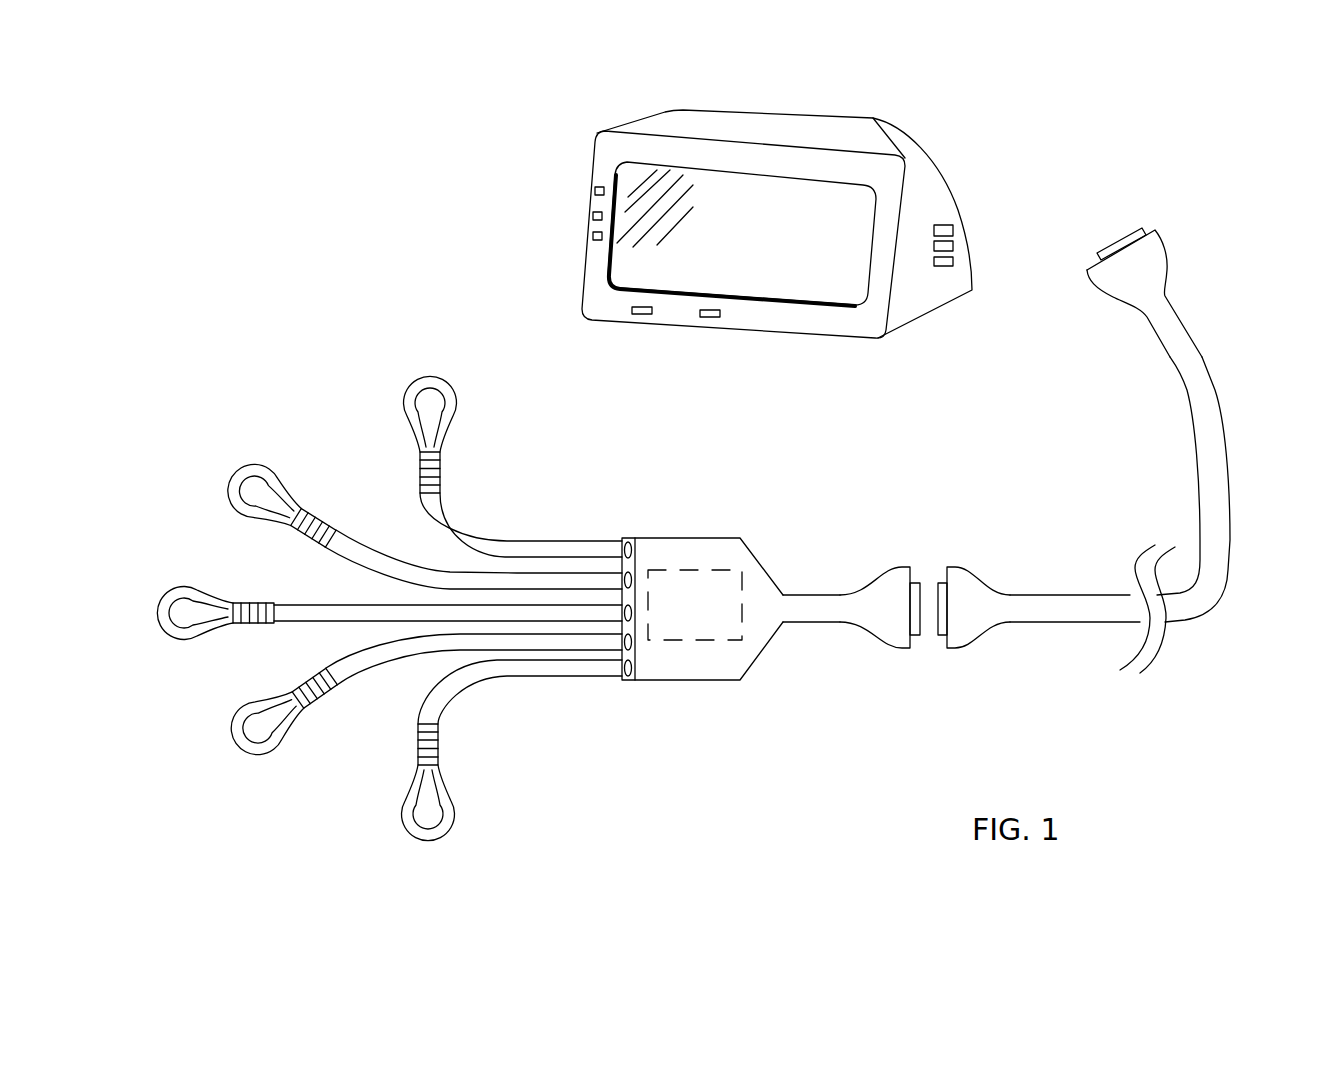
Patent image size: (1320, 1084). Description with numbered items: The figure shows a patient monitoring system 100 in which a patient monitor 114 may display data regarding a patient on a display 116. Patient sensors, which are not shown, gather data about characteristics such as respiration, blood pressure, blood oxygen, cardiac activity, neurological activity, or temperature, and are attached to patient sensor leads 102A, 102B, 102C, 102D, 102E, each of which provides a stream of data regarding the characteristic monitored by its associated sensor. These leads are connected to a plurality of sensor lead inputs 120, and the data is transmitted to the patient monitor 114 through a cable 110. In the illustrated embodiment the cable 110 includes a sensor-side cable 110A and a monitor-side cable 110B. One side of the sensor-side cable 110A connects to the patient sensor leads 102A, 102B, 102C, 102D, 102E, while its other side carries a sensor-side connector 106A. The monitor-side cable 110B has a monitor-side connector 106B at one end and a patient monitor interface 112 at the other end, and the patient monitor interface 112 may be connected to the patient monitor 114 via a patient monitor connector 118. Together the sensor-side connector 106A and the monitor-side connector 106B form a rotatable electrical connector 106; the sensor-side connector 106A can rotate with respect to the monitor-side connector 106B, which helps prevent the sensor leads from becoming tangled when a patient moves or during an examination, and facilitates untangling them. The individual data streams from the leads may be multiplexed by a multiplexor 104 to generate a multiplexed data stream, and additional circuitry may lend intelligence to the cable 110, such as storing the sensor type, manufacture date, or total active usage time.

The patient monitoring system 100 is at (428, 225).
The patient sensor lead 102A is at (432, 372).
The patient sensor lead 102B is at (250, 462).
The patient sensor lead 102C is at (187, 590).
The patient sensor lead 102D is at (243, 760).
The patient sensor lead 102E is at (427, 845).
The multiplexor 104 is at (693, 560).
The rotatable electrical connector 106 is at (867, 655).
The sensor-side connector 106A is at (902, 565).
The monitor-side connector 106B is at (958, 565).
The cable 110 is at (1015, 552).
The sensor-side cable 110A is at (830, 623).
The monitor-side cable 110B is at (1063, 623).
The patient monitor interface 112 is at (1137, 227).
The patient monitor 114 is at (902, 130).
The display 116 is at (792, 256).
The patient monitor connector 118 is at (945, 225).
The sensor lead inputs 120 is at (630, 533).